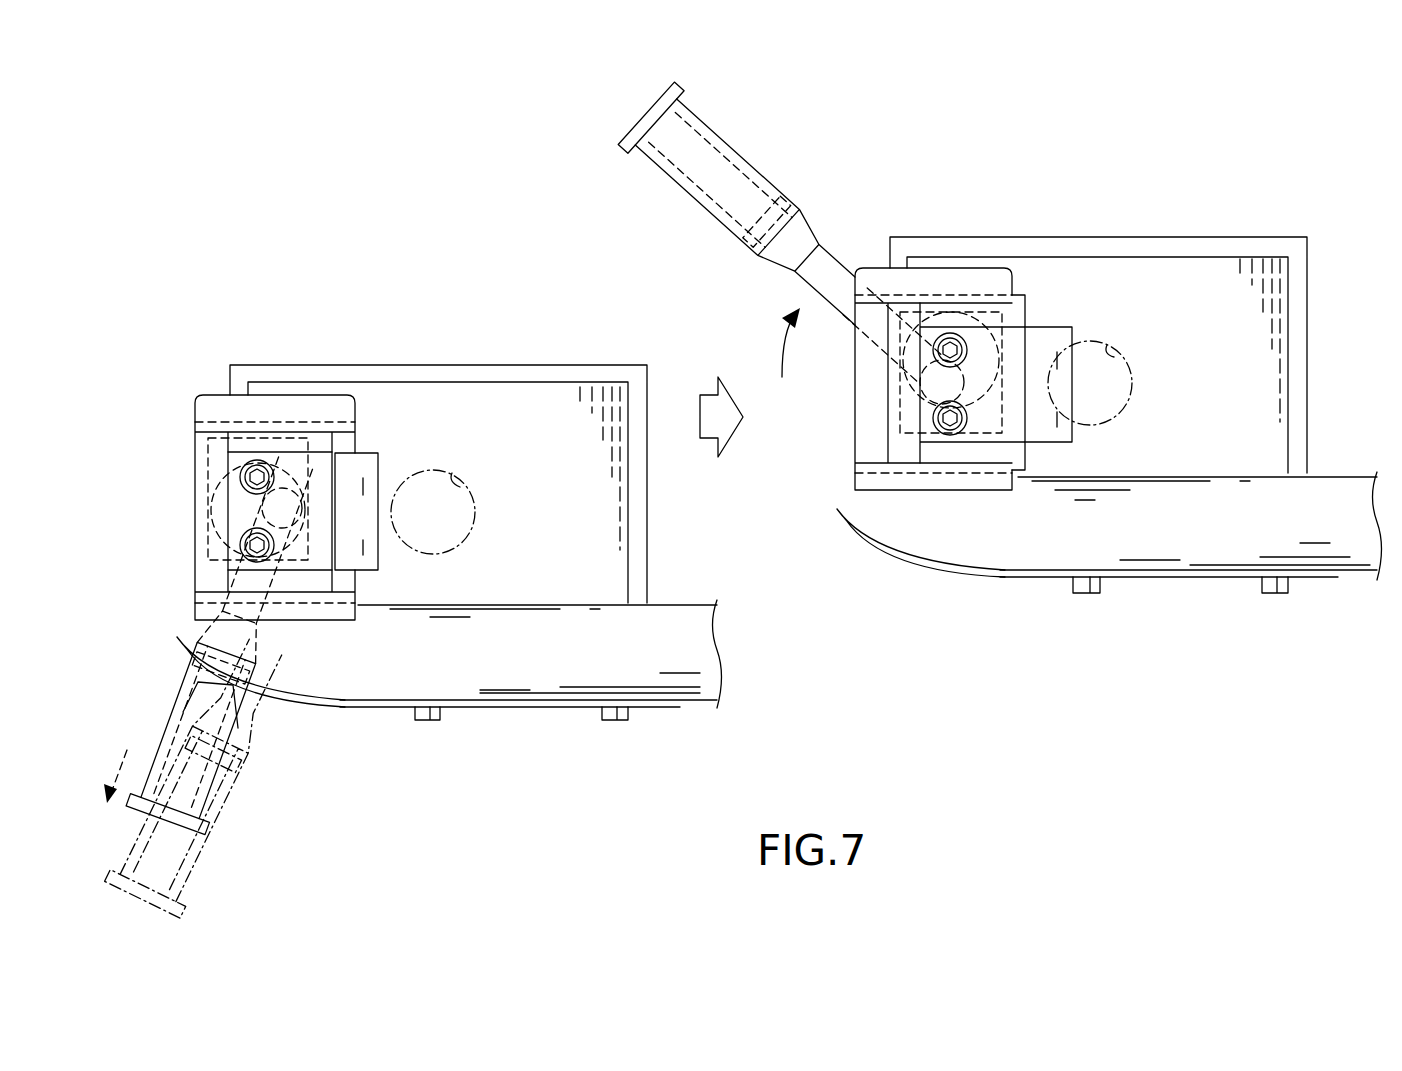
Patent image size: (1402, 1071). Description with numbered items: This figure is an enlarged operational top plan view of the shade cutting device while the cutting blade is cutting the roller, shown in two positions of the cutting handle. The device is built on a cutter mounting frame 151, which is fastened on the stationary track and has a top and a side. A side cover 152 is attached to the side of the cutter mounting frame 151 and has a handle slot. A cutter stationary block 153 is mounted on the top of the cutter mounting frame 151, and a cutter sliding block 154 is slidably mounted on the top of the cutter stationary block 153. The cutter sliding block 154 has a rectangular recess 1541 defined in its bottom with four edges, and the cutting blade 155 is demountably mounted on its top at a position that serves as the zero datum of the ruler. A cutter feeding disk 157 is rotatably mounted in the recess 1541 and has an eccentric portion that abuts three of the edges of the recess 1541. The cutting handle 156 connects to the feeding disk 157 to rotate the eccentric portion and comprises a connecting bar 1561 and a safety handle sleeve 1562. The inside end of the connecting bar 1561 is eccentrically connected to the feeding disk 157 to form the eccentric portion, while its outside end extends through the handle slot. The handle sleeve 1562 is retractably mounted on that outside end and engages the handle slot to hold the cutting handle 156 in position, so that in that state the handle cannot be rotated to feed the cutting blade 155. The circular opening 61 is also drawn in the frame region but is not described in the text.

The hole 61 is at (463, 487).
The cutter mounting frame 151 is at (635, 543).
The side cover 152 is at (510, 706).
The cutter stationary block 153 is at (212, 403).
The cutter sliding block 154 is at (322, 442).
The cutting blade 155 is at (365, 468).
The cutting handle 156 is at (258, 712).
The cutter feeding disk 157 is at (218, 502).
The rectangular recess 1541 is at (282, 448).
The connecting bar 1561 is at (248, 587).
The safety handle sleeve 1562 is at (222, 763).